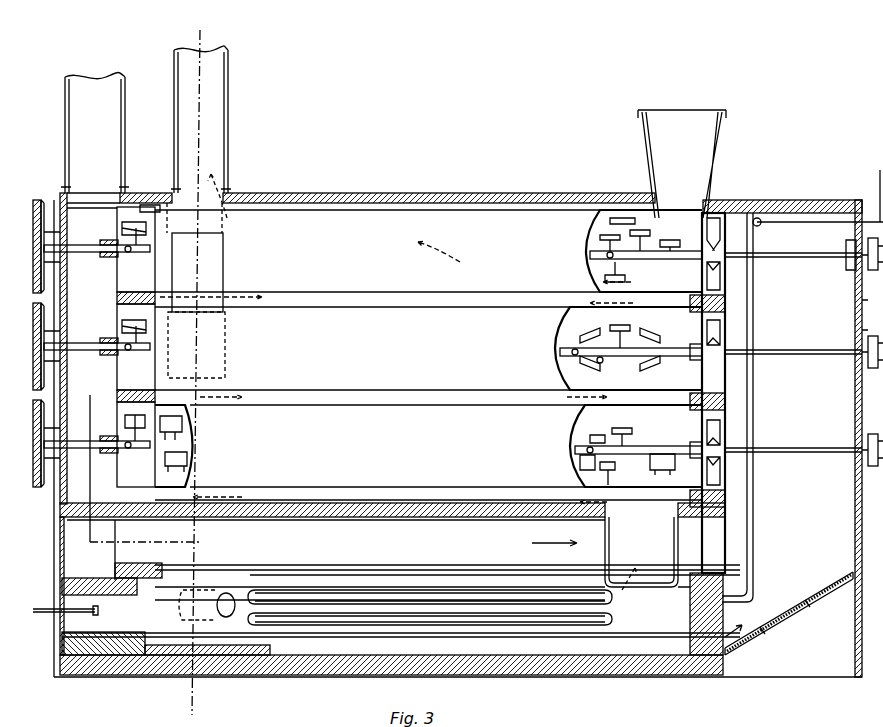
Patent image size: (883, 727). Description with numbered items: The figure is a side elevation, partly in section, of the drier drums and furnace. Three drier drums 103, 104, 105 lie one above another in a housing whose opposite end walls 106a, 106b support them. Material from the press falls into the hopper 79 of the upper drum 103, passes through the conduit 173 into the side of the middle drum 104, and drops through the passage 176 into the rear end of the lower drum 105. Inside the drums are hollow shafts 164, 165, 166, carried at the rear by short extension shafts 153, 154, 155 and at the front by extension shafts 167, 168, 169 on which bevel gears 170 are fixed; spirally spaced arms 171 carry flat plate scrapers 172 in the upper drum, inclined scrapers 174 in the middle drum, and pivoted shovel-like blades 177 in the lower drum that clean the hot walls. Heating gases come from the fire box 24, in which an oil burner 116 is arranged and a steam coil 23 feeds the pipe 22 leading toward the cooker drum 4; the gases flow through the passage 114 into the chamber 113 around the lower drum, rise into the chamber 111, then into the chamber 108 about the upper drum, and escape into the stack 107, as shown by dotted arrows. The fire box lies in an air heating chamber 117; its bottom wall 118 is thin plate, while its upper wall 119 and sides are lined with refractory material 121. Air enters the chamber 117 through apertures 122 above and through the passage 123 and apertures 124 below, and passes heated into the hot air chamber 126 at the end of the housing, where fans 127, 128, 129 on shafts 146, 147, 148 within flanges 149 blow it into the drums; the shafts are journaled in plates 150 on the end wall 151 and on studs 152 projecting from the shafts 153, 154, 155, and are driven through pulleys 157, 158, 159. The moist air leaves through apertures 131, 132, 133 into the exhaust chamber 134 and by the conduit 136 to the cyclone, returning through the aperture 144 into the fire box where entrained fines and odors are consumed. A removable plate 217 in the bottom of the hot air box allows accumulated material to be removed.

The cooker drum 4 is at (193, 43).
The pipe 22 is at (882, 183).
The steam coil 23 is at (365, 590).
The fire box 24 is at (417, 583).
The hopper 79 is at (693, 157).
The upper drum 103 is at (386, 265).
The middle drum 104 is at (376, 351).
The lower drum 105 is at (368, 450).
The end wall 106a is at (118, 298).
The end wall 106b is at (727, 305).
The stack 107 is at (216, 104).
The chamber 108 is at (386, 309).
The chamber 111 is at (345, 406).
The chamber 113 is at (342, 503).
The passage 114 is at (658, 543).
The oil burner 116 is at (83, 613).
The air heating chamber 117 is at (330, 556).
The bottom wall 118 is at (652, 648).
The upper wall 119 is at (241, 567).
The refractory material 121 is at (545, 565).
The apertures 122 is at (69, 551).
The passage 123 is at (125, 662).
The apertures 124 is at (175, 656).
The hot air chamber 126 is at (820, 575).
The fan 127 is at (718, 252).
The fan 128 is at (718, 332).
The fan 129 is at (718, 422).
The aperture 131 is at (120, 224).
The aperture 132 is at (118, 322).
The aperture 133 is at (117, 412).
The exhaust chamber 134 is at (100, 391).
The conduit 136 is at (106, 131).
The aperture 144 is at (224, 598).
The shaft 146 is at (806, 253).
The shaft 147 is at (795, 354).
The shaft 148 is at (780, 450).
The flanges 149 is at (706, 276).
The plates 150 is at (855, 280).
The end wall 151 is at (853, 308).
The studs 152 is at (724, 260).
The extension shaft 153 is at (678, 208).
The extension shaft 154 is at (693, 352).
The extension shaft 155 is at (693, 443).
The pulley 157 is at (860, 243).
The pulley 158 is at (860, 337).
The pulley 159 is at (858, 440).
The hollow shaft 164 is at (595, 254).
The hollow shaft 165 is at (562, 351).
The hollow shaft 166 is at (572, 450).
The extension shaft 167 is at (118, 253).
The extension shaft 168 is at (114, 349).
The extension shaft 169 is at (118, 458).
The bevel gears 170 is at (33, 250).
The arms 171 is at (597, 226).
The flat plate scraper 172 is at (146, 212).
The conduit 173 is at (208, 250).
The scrapers 174 is at (630, 330).
The passage 176 is at (654, 412).
The shovel-like blade 177 is at (655, 457).
The removable plate 217 is at (782, 623).